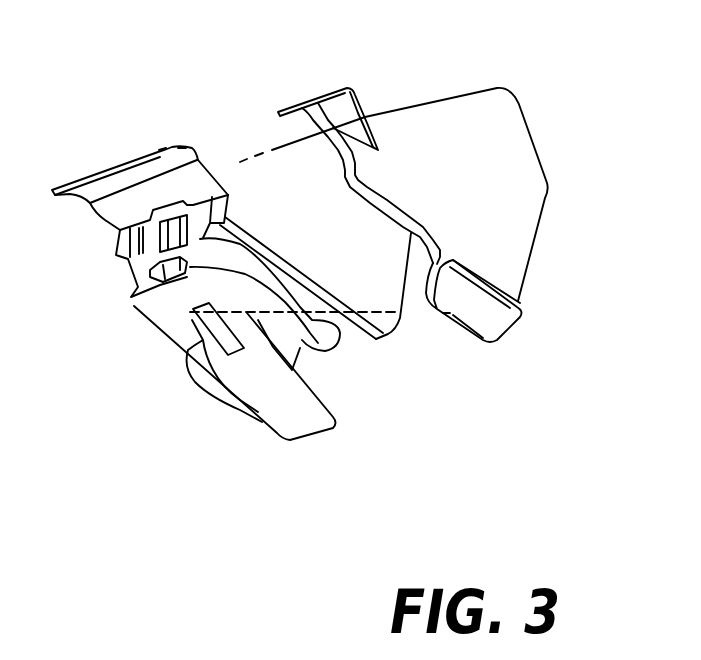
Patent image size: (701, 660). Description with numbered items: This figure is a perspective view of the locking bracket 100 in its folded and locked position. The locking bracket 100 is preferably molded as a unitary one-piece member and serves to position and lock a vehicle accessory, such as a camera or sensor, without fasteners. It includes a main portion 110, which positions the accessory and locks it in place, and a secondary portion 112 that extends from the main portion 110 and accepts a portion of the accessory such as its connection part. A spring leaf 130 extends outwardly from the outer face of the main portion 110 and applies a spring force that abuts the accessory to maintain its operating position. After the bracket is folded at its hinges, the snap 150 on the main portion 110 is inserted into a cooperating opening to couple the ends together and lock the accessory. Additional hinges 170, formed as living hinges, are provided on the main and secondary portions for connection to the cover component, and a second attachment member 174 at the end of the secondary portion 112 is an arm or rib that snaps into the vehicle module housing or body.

The locking bracket 100 is at (561, 115).
The main portion 110 is at (128, 298).
The secondary portion 112 is at (530, 256).
The spring leaf 130 is at (287, 417).
The snap 150 is at (311, 357).
The hinges 170 is at (309, 96).
The second attachment member 174 is at (527, 312).